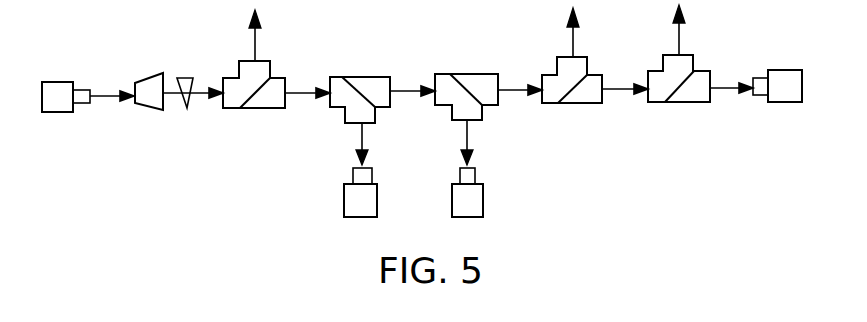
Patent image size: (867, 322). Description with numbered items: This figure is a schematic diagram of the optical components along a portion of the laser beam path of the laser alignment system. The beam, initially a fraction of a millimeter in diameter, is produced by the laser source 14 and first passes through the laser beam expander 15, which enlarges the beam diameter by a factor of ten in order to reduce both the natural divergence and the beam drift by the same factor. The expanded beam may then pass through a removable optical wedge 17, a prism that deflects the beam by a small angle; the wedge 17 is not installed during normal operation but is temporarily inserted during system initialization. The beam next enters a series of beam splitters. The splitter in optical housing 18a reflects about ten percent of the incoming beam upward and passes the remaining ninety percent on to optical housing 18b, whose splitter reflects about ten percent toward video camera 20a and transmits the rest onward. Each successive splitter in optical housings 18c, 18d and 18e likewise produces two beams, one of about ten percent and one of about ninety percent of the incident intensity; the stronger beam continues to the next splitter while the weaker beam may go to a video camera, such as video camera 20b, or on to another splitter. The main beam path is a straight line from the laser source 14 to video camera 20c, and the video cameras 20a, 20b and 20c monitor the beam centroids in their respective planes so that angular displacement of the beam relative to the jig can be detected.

The laser source 14 is at (58, 82).
The laser beam expander 15 is at (142, 105).
The removable optical wedge 17 is at (180, 80).
The optical housing 18a is at (257, 108).
The optical housing 18b is at (360, 73).
The optical housing 18c is at (465, 73).
The optical housing 18d is at (573, 103).
The optical housing 18e is at (678, 102).
The video camera 20a is at (344, 185).
The video camera 20b is at (452, 185).
The video camera 20c is at (768, 100).